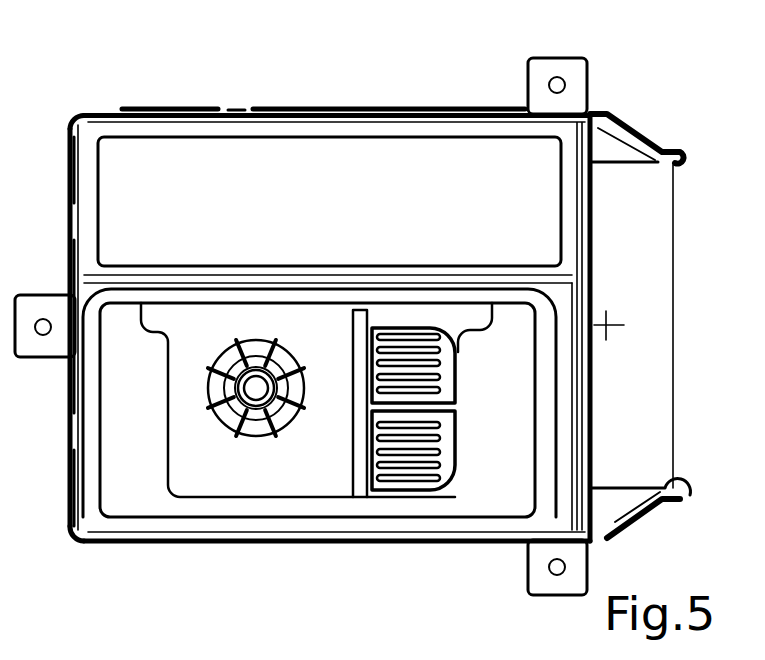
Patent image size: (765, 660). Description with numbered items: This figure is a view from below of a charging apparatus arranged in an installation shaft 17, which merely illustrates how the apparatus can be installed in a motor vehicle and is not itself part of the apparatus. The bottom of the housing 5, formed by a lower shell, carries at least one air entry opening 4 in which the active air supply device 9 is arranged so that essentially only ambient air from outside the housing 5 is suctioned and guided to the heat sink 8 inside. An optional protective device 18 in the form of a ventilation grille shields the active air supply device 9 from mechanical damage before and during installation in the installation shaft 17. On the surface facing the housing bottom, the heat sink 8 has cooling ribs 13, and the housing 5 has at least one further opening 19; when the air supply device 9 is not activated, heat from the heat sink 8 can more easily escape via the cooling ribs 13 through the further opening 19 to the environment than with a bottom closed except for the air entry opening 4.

The air entry opening 4 is at (220, 423).
The housing 5 is at (223, 472).
The heat sink 8 is at (430, 482).
The active air supply device 9 is at (212, 365).
The cooling ribs 13 is at (393, 482).
The installation shaft 17 is at (167, 158).
The protective device 18 is at (282, 423).
The further opening 19 is at (400, 328).